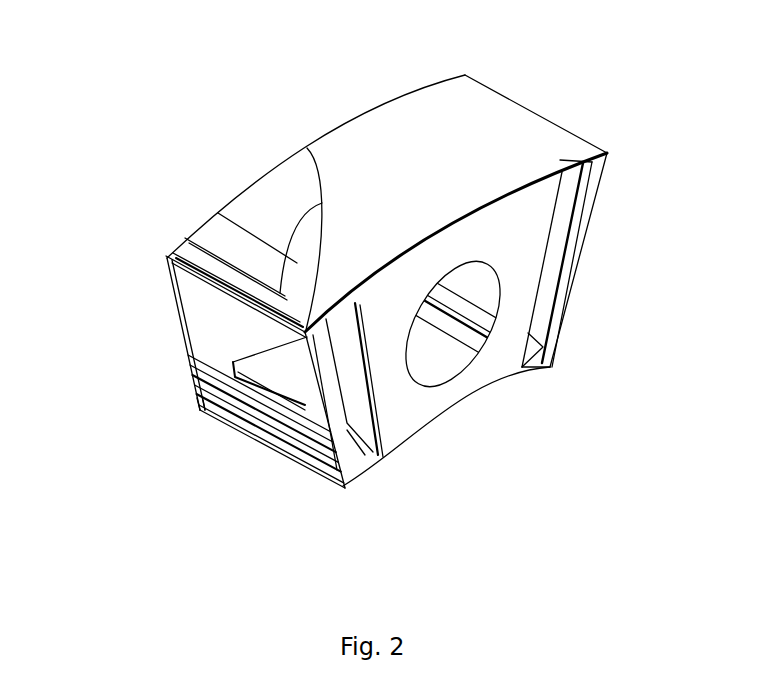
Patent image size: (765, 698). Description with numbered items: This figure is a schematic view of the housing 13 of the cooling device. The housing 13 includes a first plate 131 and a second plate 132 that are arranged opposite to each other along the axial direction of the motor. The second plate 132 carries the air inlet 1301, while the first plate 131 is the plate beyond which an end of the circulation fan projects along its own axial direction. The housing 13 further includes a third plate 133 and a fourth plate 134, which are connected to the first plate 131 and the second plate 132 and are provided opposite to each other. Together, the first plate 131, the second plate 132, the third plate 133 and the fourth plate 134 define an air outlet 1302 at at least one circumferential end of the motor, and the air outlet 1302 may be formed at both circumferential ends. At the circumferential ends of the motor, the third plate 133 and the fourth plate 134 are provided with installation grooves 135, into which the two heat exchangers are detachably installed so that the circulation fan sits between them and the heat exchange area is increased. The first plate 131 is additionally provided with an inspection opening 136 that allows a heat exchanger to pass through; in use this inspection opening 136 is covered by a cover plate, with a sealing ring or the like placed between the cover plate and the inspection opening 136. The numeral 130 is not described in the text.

The housing 13 is at (434, 28).
The through hole 130 is at (440, 357).
The first plate 131 is at (382, 428).
The second plate 132 is at (350, 120).
The third plate 133 is at (497, 147).
The fourth plate 134 is at (290, 460).
The installation grooves 135 is at (187, 357).
The inspection opening 136 is at (558, 275).
The air inlet 1301 is at (297, 223).
The air outlet 1302 is at (197, 383).